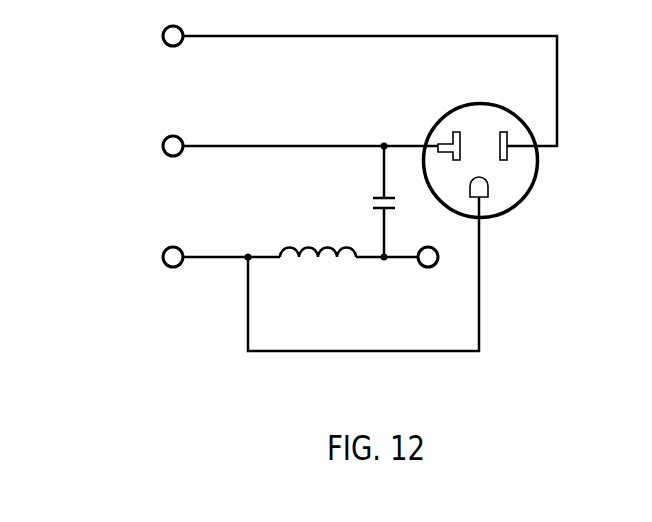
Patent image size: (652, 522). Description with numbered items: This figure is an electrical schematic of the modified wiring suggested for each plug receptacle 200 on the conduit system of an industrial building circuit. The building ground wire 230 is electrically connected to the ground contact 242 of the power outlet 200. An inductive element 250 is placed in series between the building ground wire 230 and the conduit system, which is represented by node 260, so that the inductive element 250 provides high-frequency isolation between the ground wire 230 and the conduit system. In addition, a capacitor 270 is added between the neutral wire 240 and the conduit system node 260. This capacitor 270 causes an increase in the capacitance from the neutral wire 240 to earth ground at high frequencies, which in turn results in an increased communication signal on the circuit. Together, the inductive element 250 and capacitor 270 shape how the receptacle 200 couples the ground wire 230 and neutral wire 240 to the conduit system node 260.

The plug receptacle 200 is at (547, 161).
The building ground wire 230 is at (159, 255).
The neutral wire 240 is at (159, 143).
The ground contact 242 is at (490, 186).
The inductive element 250 is at (319, 247).
The node 260 is at (423, 270).
The capacitor 270 is at (369, 201).